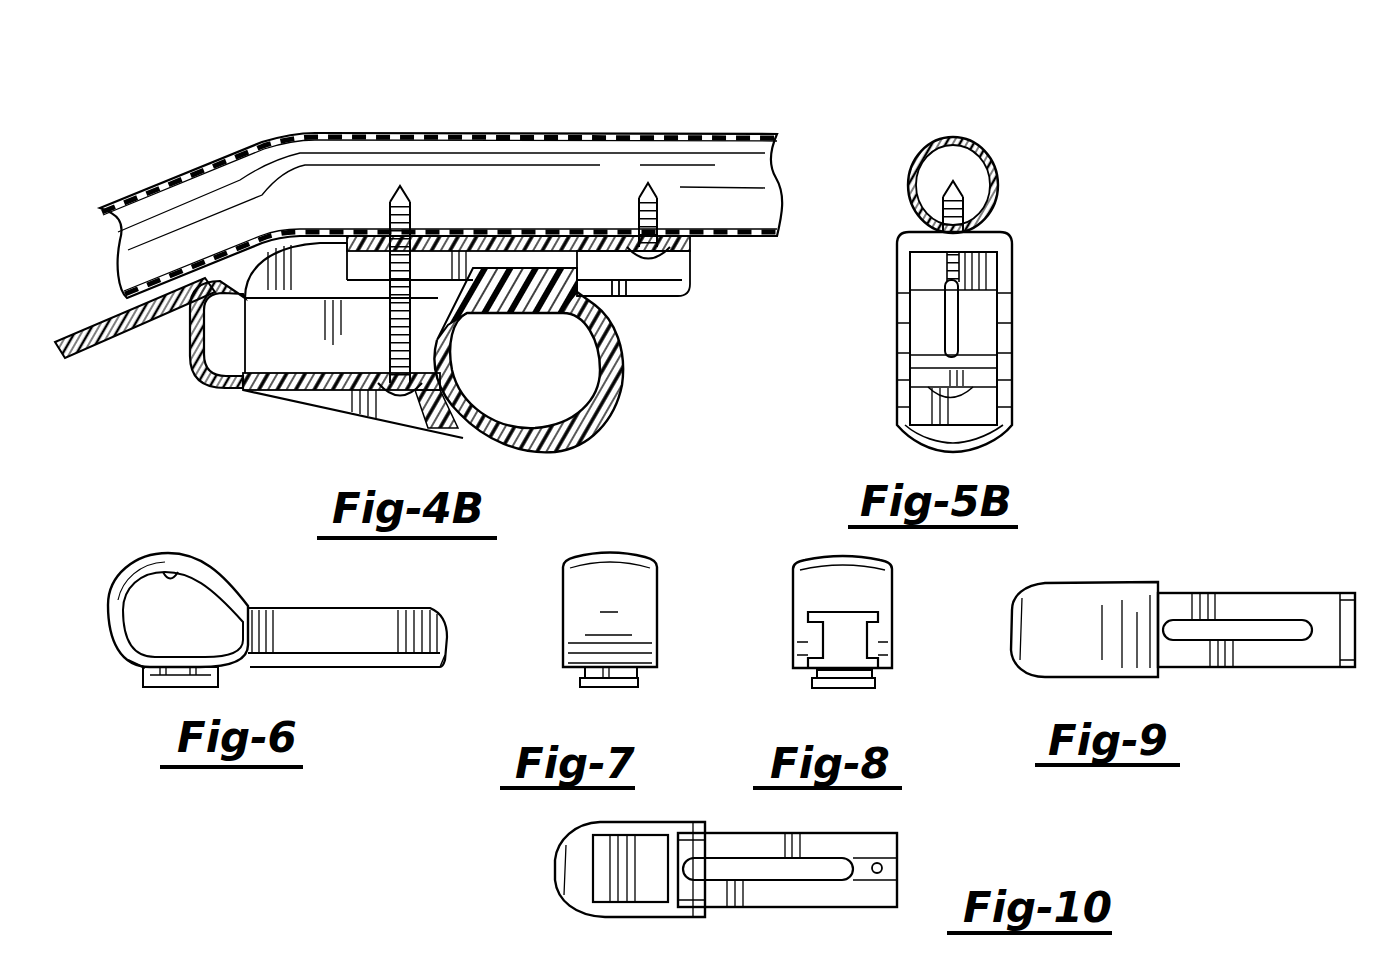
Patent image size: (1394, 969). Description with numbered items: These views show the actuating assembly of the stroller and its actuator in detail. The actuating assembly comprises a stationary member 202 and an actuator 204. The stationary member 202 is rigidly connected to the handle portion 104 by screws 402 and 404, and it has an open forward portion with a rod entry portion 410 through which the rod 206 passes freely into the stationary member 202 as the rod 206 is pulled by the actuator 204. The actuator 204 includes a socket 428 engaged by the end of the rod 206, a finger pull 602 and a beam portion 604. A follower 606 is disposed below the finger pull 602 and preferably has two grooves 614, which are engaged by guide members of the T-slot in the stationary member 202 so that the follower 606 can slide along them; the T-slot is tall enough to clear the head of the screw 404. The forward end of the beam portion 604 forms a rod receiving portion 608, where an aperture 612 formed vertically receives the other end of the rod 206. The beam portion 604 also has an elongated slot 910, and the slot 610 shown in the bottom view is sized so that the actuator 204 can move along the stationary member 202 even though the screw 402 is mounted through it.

In FIG. 4B, the handle portion 104 is at (315, 175).
In FIG. 4B, the screw 402 is at (400, 187).
In FIG. 4B, the screw 404 is at (653, 183).
In FIG. 4B, the rod entry portion 410 is at (248, 297).
In FIG. 4B, the rod 206 is at (130, 337).
In FIG. 4B, the socket 428 is at (222, 387).
In FIG. 4B, the stationary member 202 is at (395, 413).
In FIG. 4B, the actuator 204 is at (580, 440).
In FIG. 6, the finger pull 602 is at (175, 578).
In FIG. 6, the beam portion 604 is at (328, 630).
In FIG. 6, the groove 614 is at (140, 672).
In FIG. 6, the follower 606 is at (145, 687).
In FIG. 7, the follower 606 is at (638, 680).
In FIG. 8, the follower 606 is at (832, 673).
In FIG. 6, the rod receiving portion 608 is at (440, 667).
In FIG. 9, the elongated slot 910 is at (1290, 630).
In FIG. 10, the slot 610 is at (757, 870).
In FIG. 10, the aperture 612 is at (880, 867).